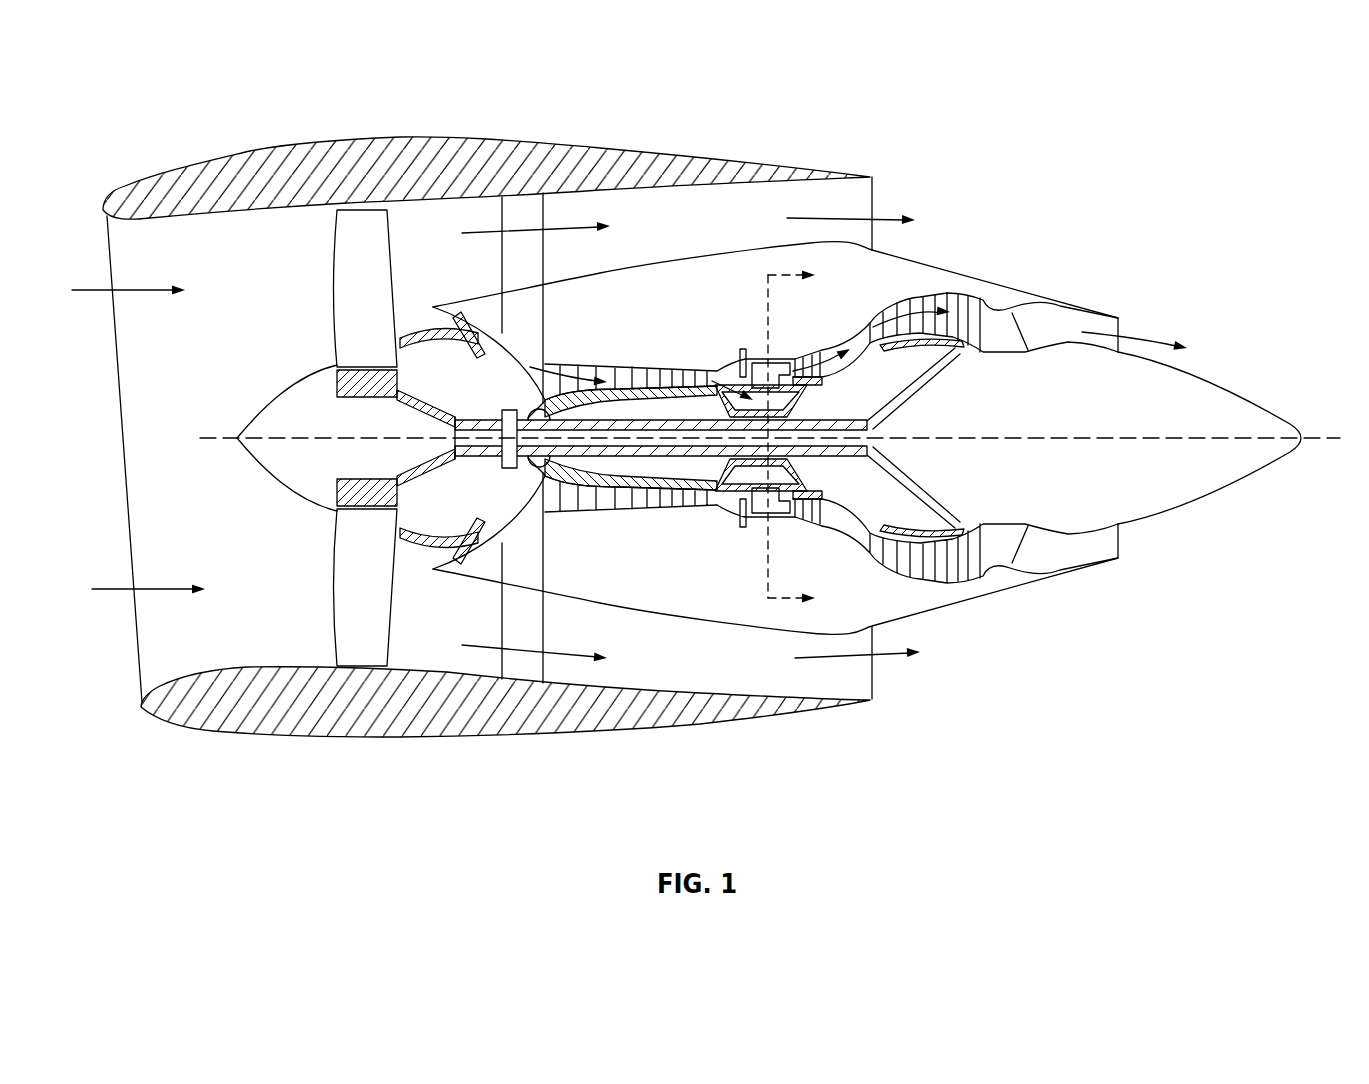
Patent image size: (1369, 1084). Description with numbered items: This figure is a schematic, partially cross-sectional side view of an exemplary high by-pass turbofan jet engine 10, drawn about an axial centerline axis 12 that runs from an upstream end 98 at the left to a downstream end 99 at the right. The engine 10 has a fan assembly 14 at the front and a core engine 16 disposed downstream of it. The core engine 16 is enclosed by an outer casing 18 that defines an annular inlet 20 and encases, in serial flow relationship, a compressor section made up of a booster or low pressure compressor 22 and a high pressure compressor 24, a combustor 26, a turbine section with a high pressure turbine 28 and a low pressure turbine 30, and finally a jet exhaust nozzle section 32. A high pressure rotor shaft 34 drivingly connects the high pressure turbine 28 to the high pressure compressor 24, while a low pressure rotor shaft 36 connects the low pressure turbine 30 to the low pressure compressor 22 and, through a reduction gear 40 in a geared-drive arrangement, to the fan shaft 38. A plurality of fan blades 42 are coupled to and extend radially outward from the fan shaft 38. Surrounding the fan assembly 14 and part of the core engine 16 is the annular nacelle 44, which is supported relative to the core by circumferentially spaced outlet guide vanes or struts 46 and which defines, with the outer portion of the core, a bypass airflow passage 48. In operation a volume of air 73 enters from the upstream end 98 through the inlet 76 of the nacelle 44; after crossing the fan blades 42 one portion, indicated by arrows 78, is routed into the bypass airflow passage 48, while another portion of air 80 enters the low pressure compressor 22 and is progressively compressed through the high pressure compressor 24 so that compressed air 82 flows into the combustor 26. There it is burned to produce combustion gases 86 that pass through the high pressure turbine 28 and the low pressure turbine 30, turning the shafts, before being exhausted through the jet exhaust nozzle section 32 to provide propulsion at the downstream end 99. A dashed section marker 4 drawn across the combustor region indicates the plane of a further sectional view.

The high by-pass turbofan jet engine 10 is at (1074, 128).
The axial centerline axis 12 is at (1079, 434).
The fan assembly 14 is at (293, 402).
The core engine 16 is at (775, 227).
The outer casing 18 is at (717, 619).
The annular inlet 20 is at (442, 558).
The low pressure compressor 22 is at (497, 507).
The high pressure compressor 24 is at (573, 504).
The combustor 26 is at (763, 509).
The high pressure turbine 28 is at (822, 514).
The low pressure turbine 30 is at (970, 555).
The jet exhaust nozzle section 32 is at (1039, 578).
The high pressure rotor shaft 34 is at (804, 404).
The low pressure rotor shaft 36 is at (910, 398).
The fan shaft 38 is at (400, 405).
The reduction gear 40 is at (656, 421).
The fan blades 42 is at (337, 291).
The nacelle 44 is at (337, 146).
The outlet guide vanes or struts 46 is at (529, 207).
The bypass airflow passage 48 is at (682, 237).
The volume of air 73 is at (152, 285).
The inlet 76 is at (483, 688).
The bypass air arrows 78 is at (880, 210).
The core air 80 is at (455, 317).
The compressed air 82 is at (561, 377).
The combustion gases 86 is at (798, 365).
The upstream end 98 is at (107, 455).
The downstream end 99 is at (1332, 497).
The section line 4- 4 is at (802, 438).